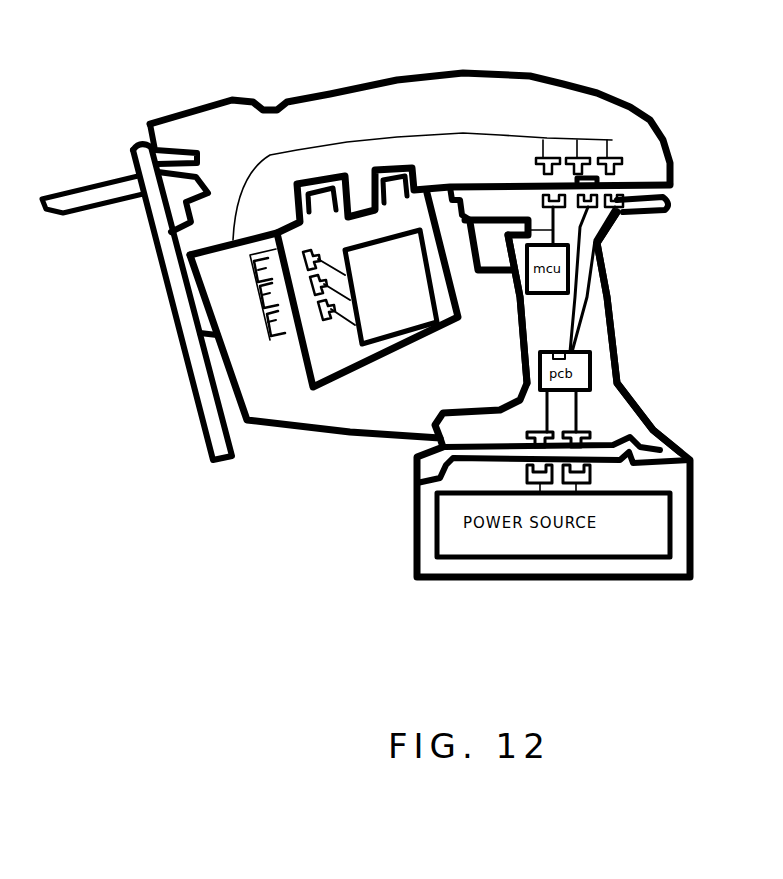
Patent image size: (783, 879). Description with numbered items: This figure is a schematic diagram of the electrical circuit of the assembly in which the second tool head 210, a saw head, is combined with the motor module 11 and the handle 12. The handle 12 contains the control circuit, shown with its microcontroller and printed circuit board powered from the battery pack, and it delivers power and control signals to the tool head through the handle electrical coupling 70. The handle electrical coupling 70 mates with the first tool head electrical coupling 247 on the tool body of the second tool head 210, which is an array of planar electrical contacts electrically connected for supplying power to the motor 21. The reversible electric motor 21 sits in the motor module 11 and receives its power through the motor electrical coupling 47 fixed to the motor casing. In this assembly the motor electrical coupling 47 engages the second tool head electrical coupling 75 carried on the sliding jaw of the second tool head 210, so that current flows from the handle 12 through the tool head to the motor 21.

The second tool head 210 is at (280, 120).
The first tool head electrical coupling 247 is at (631, 150).
The handle electrical coupling 70 is at (646, 213).
The handle 12 is at (600, 328).
The motor module 11 is at (390, 340).
The reversible electric motor 21 is at (413, 316).
The second tool head electrical coupling 75 is at (275, 346).
The motor electrical coupling 47 is at (339, 338).